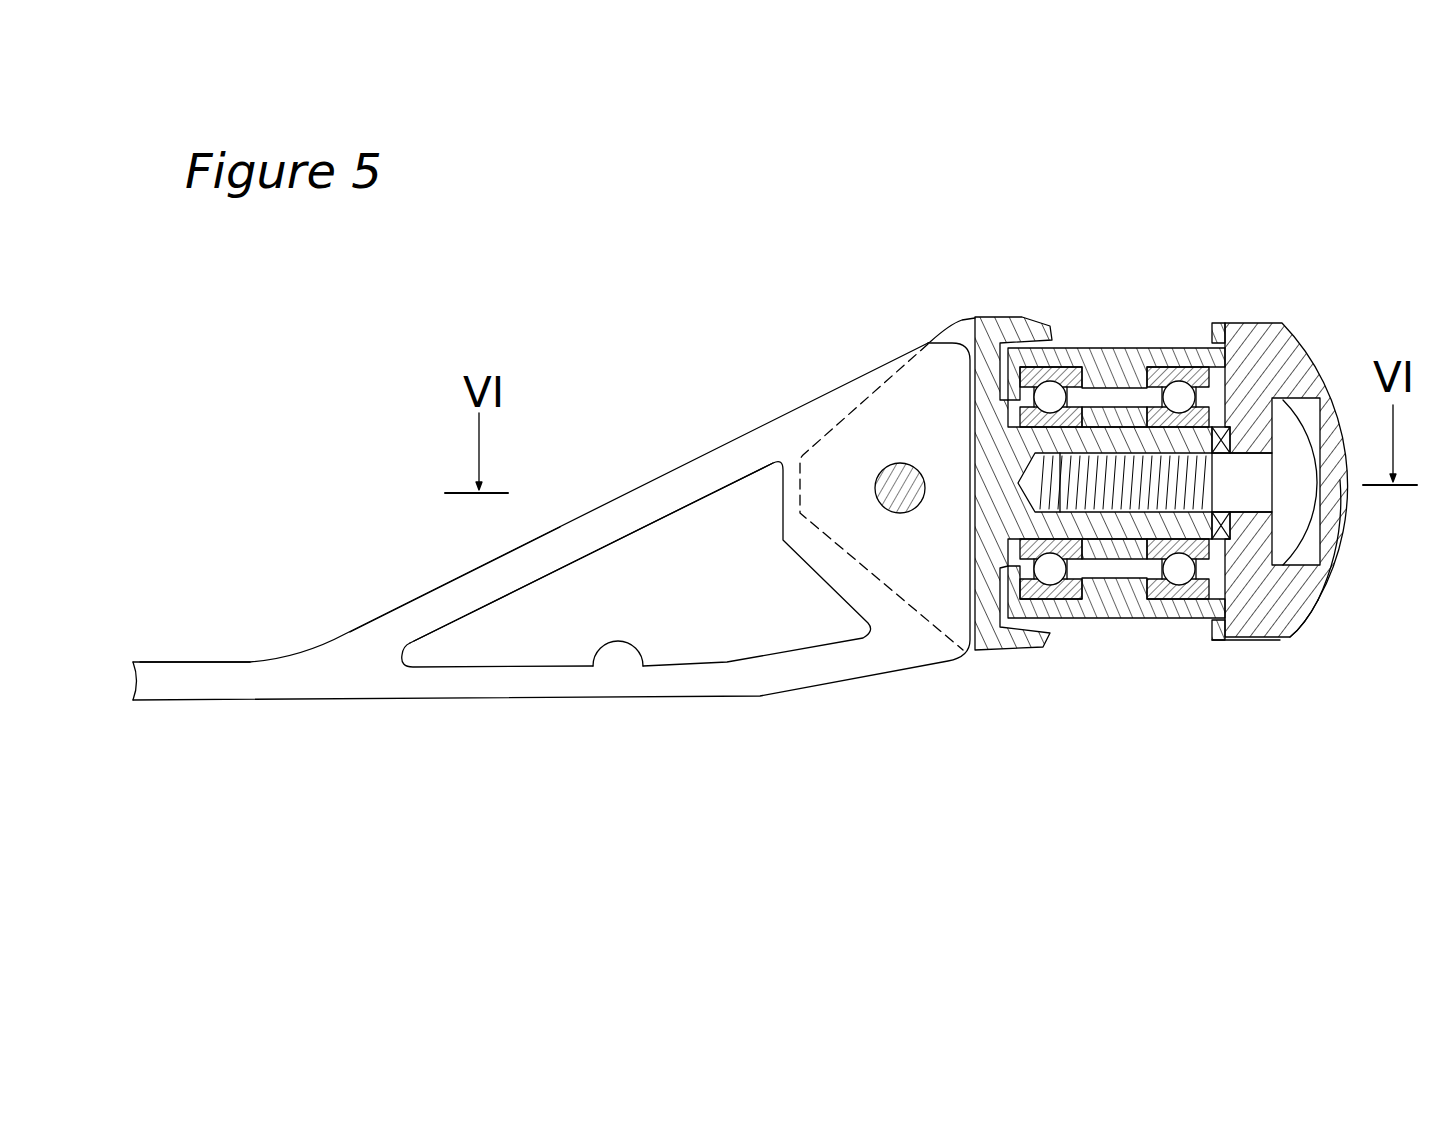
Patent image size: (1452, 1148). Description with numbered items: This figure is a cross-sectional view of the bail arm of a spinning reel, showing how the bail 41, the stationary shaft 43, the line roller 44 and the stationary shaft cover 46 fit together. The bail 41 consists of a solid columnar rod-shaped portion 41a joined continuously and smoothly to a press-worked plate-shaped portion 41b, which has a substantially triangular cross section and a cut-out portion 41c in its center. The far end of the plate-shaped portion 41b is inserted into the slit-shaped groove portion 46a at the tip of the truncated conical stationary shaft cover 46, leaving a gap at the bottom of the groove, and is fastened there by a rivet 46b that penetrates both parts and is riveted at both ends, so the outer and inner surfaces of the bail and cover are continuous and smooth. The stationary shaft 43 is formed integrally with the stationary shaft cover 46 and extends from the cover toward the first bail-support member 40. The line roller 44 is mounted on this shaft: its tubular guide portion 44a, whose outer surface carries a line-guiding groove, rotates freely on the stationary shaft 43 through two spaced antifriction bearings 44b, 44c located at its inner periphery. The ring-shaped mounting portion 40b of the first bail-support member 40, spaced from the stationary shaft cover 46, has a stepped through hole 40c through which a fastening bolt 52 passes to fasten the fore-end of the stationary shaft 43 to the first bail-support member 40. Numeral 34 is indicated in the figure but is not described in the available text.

The support shaft 34 is at (1212, 650).
The first bail-support member 40 is at (1297, 637).
The mounting portion 40b is at (1308, 602).
The through hole 40c is at (1330, 547).
The bail 41 is at (355, 612).
The rod-shaped portion 41a is at (213, 662).
The plate-shaped portion 41b is at (600, 527).
The cut-out portion 41c is at (598, 672).
The stationary shaft 43 is at (1130, 520).
The line roller 44 is at (1140, 350).
The guide portion 44a is at (1100, 350).
The antifriction bearing 44b is at (1028, 345).
The antifriction bearing 44c is at (1195, 340).
The stationary shaft cover 46 is at (957, 328).
The groove portion 46a is at (868, 398).
The rivet 46b is at (903, 507).
The fastening bolt 52 is at (1283, 428).